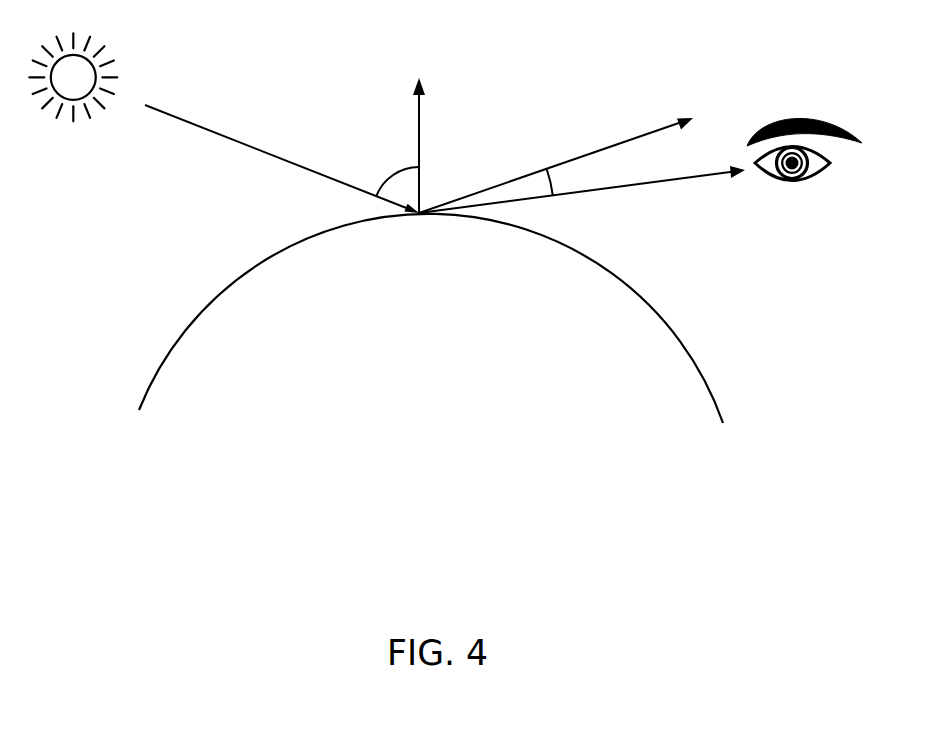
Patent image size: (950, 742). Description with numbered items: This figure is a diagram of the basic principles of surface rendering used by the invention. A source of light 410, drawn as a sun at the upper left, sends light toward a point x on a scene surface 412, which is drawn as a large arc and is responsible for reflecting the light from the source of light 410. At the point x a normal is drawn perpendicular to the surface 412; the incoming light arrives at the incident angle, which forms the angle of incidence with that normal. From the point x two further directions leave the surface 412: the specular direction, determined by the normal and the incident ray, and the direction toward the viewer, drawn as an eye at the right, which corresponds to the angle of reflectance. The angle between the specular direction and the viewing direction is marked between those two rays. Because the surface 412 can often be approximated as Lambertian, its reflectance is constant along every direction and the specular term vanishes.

The source of light 410 is at (98, 40).
The surface 412 is at (682, 340).
The point on the scene surface x is at (422, 217).